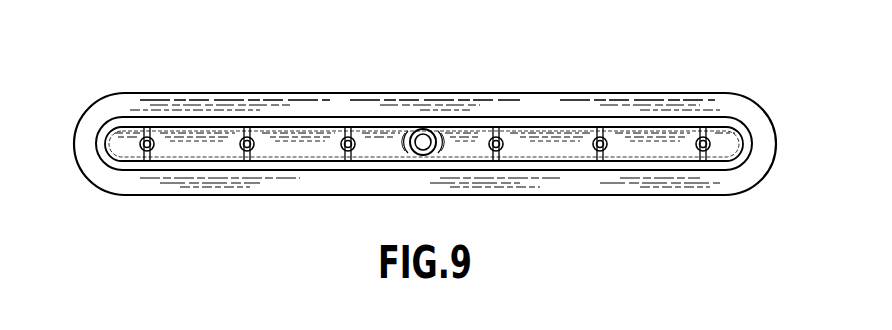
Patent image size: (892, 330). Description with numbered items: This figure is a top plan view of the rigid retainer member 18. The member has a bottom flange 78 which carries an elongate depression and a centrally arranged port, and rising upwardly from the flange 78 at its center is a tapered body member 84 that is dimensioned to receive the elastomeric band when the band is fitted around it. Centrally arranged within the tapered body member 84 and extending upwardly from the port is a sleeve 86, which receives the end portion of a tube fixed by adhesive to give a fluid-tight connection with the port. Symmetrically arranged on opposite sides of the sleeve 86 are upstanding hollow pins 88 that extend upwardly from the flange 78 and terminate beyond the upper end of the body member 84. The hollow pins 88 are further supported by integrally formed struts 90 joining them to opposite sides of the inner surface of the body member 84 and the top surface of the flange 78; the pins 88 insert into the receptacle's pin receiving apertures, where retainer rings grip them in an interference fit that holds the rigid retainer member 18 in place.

The rigid retainer member 18 is at (82, 93).
The bottom flange 78 is at (750, 102).
The tapered body member 84 is at (653, 118).
The sleeve 86 is at (442, 150).
The hollow pins 88 is at (243, 155).
The struts 90 is at (153, 157).